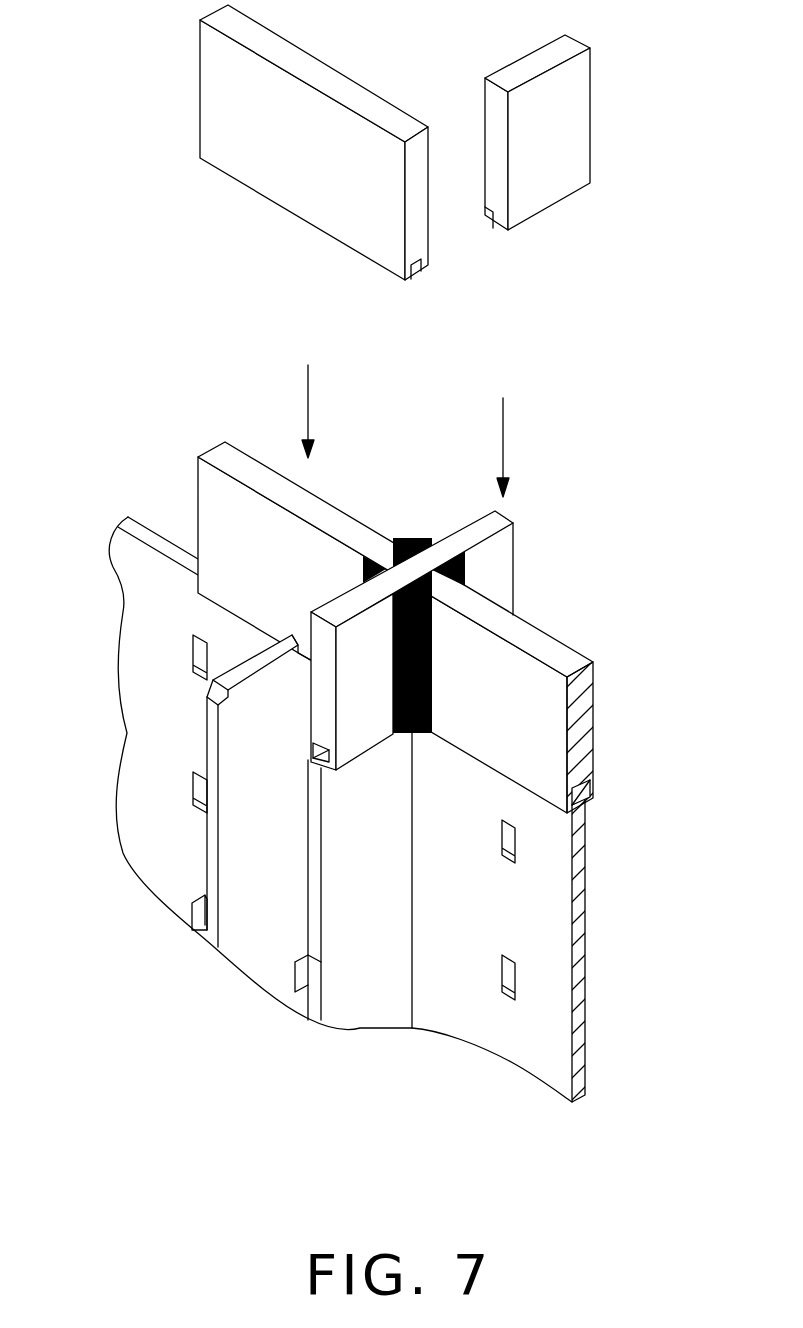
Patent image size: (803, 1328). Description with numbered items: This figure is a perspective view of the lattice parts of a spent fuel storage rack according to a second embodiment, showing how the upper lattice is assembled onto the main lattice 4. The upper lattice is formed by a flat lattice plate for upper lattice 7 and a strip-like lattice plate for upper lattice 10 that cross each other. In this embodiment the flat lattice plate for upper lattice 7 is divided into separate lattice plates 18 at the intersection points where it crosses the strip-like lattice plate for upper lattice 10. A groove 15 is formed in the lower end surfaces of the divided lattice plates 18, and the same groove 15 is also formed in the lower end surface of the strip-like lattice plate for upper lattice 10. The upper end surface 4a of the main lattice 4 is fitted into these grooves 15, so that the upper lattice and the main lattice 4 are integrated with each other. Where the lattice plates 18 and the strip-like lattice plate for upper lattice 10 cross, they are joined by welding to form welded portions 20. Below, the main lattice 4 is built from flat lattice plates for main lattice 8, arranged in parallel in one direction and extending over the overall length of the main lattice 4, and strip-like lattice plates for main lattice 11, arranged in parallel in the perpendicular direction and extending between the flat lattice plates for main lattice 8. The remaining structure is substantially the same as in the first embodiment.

The main lattice 4 is at (470, 1020).
The upper end surface of the main lattice 4a is at (323, 745).
The flat lattice plate for upper lattice 7 is at (610, 697).
The flat lattice plate for main lattice 8 is at (547, 933).
The strip-like lattice plate for upper lattice 10 is at (558, 182).
The strip-like lattice plate for main lattice 11 is at (250, 947).
The groove 15 is at (428, 268).
The lattice plate 18 is at (271, 173).
The welded portion 20 is at (432, 632).